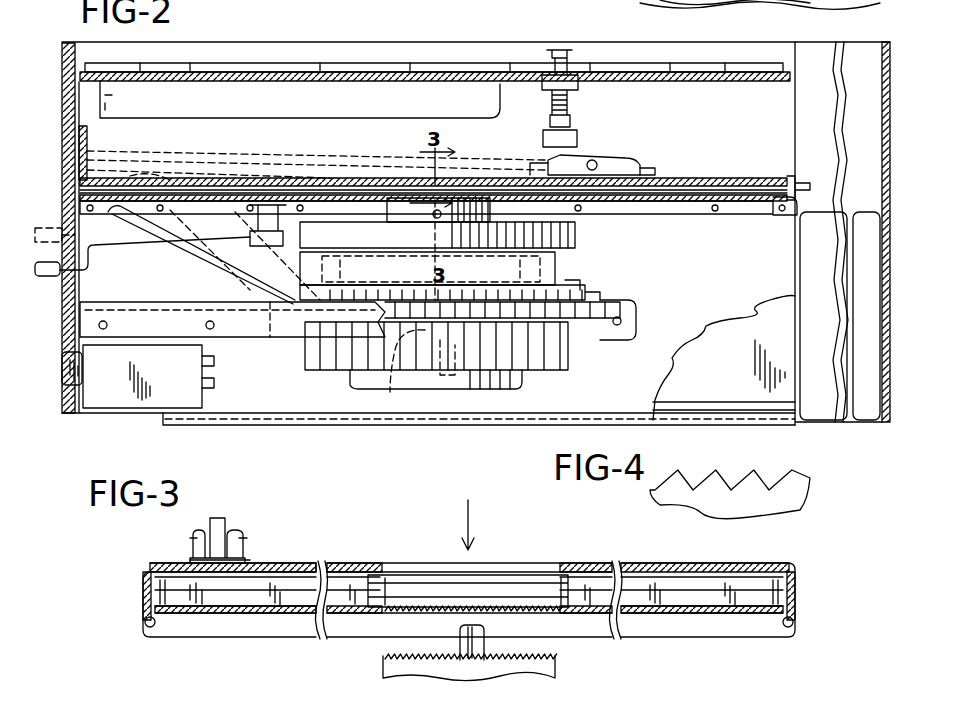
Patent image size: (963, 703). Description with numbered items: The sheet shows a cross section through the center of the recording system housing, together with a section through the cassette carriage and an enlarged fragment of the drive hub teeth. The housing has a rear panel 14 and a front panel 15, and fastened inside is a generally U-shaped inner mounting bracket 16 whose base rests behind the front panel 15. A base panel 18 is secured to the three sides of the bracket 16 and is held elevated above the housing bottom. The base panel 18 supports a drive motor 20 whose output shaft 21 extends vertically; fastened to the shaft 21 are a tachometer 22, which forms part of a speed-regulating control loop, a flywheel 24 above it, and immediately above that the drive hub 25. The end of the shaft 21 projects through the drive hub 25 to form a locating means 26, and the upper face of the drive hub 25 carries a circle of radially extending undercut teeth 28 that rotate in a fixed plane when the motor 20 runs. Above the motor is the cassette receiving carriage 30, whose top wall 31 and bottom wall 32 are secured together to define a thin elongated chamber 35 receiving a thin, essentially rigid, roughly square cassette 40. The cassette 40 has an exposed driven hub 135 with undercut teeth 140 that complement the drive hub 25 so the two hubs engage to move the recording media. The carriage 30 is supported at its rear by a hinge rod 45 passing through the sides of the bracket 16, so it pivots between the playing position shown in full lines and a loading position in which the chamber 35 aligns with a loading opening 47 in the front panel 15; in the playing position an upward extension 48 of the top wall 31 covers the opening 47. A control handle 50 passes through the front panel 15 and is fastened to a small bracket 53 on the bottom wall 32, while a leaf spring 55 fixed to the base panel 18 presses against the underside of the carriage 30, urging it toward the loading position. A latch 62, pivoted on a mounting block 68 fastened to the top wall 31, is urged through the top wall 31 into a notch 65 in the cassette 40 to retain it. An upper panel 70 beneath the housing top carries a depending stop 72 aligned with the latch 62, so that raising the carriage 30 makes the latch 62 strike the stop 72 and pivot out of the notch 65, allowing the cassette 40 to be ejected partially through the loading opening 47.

In FIG. 2, the rear panel 14 is at (882, 400).
In FIG. 2, the front panel 15 is at (70, 60).
In FIG. 2, the inner mounting bracket 16 is at (708, 316).
In FIG. 2, the base panel 18 is at (257, 327).
In FIG. 2, the drive motor 20 is at (552, 343).
In FIG. 2, the output shaft 21 is at (392, 390).
In FIG. 2, the tachometer 22 is at (556, 264).
In FIG. 2, the flywheel 24 is at (574, 235).
In FIG. 2, the drive hub 25 is at (490, 205).
In FIG. 4, the drive hub 25 is at (655, 502).
In FIG. 3, the locating means 26 is at (400, 653).
In FIG. 3, the undercut teeth 28 is at (548, 654).
In FIG. 4, the undercut teeth 28 is at (778, 470).
In FIG. 2, the cassette receiving carriage 30 is at (705, 162).
In FIG. 3, the cassette receiving carriage 30 is at (808, 591).
In FIG. 2, the top wall 31 is at (740, 178).
In FIG. 3, the top wall 31 is at (603, 575).
In FIG. 2, the bottom wall 32 is at (730, 214).
In FIG. 3, the bottom wall 32 is at (640, 613).
In FIG. 2, the chamber 35 is at (72, 192).
In FIG. 3, the chamber 35 is at (711, 555).
In FIG. 2, the cassette 40 is at (298, 180).
In FIG. 3, the cassette 40 is at (170, 600).
In FIG. 2, the hinge rod 45 is at (773, 216).
In FIG. 2, the loading opening 47 is at (70, 146).
In FIG. 2, the upward extension 48 is at (88, 132).
In FIG. 2, the control handle 50 is at (46, 278).
In FIG. 2, the small bracket 53 is at (268, 247).
In FIG. 2, the leaf spring 55 is at (222, 250).
In FIG. 2, the latch 62 is at (612, 165).
In FIG. 3, the latch 62 is at (218, 518).
In FIG. 2, the notch 65 is at (806, 0).
In FIG. 3, the mounting block 68 is at (200, 560).
In FIG. 2, the upper panel 70 is at (733, 82).
In FIG. 2, the stop 72 is at (580, 138).
In FIG. 3, the driven hub 135 is at (418, 606).
In FIG. 3, the undercut teeth 140 is at (538, 613).